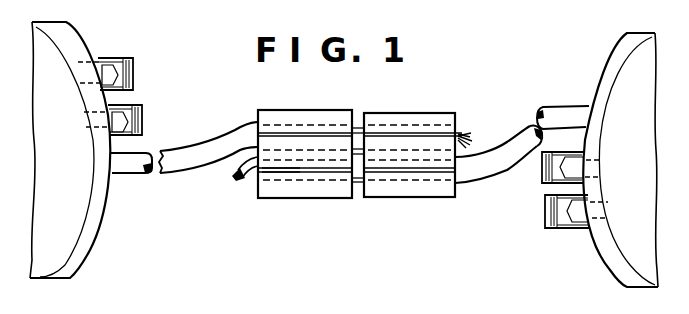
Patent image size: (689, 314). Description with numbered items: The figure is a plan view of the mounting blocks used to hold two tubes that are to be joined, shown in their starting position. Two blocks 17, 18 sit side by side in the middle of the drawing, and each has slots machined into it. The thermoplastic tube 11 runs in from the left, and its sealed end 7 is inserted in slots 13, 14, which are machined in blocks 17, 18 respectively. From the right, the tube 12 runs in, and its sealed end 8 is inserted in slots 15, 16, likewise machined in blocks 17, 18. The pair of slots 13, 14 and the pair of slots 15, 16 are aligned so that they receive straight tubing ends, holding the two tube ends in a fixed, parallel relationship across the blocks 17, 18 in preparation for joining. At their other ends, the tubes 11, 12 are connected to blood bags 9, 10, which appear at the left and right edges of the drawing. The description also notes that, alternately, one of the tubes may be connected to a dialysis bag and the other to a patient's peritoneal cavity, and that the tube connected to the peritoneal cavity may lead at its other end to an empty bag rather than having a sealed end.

The sealed end 7 is at (470, 132).
The sealed end 8 is at (234, 177).
The blood bag 9 is at (82, 45).
The blood bag 10 is at (610, 66).
The thermoplastic tube 11 is at (217, 133).
The tube 12 is at (506, 164).
The slot 13 is at (264, 127).
The slot 14 is at (460, 137).
The slot 15 is at (267, 172).
The slot 16 is at (447, 179).
The block 17 is at (290, 158).
The block 18 is at (434, 163).